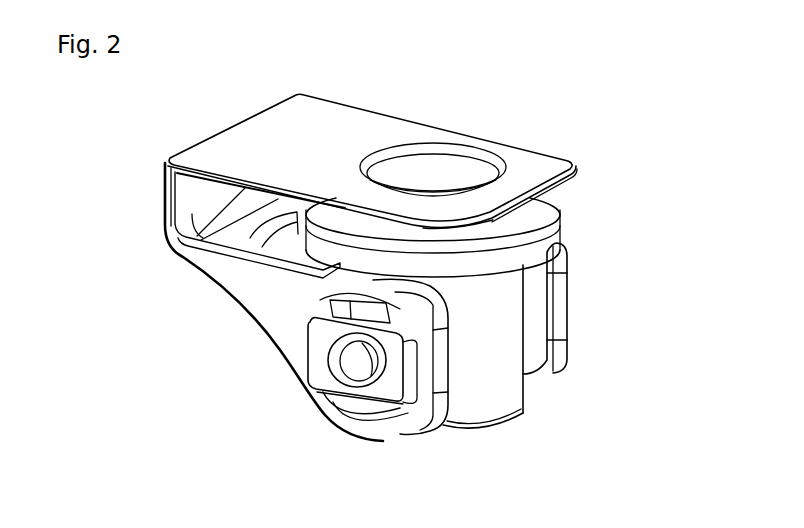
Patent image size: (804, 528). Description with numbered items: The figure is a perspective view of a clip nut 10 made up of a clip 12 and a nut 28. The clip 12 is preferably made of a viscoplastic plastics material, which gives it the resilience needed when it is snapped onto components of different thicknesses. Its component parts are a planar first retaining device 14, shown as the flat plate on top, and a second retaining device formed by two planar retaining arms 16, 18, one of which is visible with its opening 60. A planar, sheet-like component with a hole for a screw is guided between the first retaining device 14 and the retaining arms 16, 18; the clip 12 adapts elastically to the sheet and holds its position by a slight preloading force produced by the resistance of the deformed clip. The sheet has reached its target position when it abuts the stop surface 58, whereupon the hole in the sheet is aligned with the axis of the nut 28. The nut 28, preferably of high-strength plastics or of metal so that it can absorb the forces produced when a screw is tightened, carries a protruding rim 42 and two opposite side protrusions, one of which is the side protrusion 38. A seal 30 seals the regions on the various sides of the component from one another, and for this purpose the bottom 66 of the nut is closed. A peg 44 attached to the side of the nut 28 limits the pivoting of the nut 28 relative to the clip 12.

The clip nut 10 is at (115, 455).
The clip 12 is at (192, 267).
The first retaining device 14 is at (385, 110).
The retaining arm 16 is at (162, 190).
The retaining arm 18 is at (568, 283).
The nut 28 is at (507, 417).
The seal 30 is at (523, 208).
The side protrusion 38 is at (318, 390).
The protruding rim 42 is at (562, 220).
The peg 44 is at (327, 310).
The stop surface 58 is at (195, 192).
The opening 60 is at (367, 407).
The bottom of the nut 66 is at (453, 430).